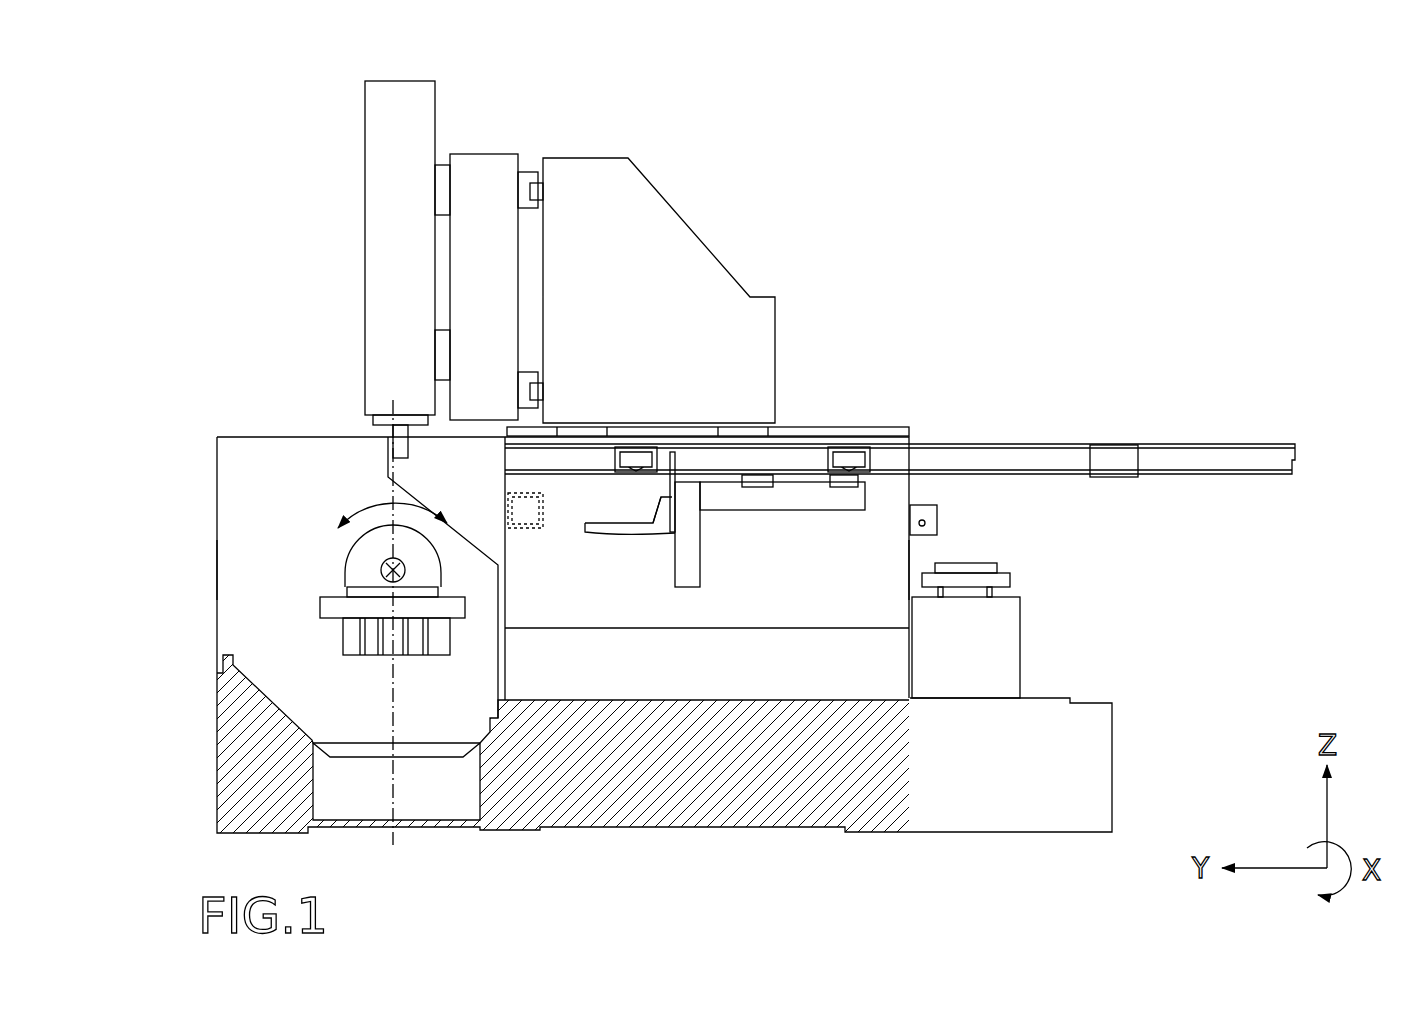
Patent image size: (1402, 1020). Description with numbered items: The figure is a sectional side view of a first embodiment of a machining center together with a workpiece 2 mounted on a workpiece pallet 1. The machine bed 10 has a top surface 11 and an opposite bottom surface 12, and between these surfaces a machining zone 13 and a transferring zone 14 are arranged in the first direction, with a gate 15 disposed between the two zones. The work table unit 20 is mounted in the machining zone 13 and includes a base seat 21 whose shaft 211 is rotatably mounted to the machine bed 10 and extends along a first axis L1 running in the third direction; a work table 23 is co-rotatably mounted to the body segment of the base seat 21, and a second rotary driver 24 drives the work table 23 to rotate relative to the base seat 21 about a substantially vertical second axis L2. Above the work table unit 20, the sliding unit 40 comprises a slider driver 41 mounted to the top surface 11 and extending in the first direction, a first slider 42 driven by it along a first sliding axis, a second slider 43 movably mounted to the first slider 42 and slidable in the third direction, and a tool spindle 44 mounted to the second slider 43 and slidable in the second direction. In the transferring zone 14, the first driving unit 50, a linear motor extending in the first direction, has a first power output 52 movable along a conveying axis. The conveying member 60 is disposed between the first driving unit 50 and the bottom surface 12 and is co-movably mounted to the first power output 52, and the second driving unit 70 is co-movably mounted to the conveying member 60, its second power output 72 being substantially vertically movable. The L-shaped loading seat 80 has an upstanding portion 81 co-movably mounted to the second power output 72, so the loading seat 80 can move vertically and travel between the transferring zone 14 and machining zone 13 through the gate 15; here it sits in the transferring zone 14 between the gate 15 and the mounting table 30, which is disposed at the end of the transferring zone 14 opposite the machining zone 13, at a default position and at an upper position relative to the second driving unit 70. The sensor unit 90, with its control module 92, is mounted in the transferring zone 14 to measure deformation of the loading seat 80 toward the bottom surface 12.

The workpiece pallet 1 is at (1013, 580).
The workpiece 2 is at (1001, 567).
The machine bed 10 is at (215, 772).
The top surface 11 is at (892, 433).
The bottom surface 12 is at (870, 833).
The machining zone 13 is at (313, 570).
The transferring zone 14 is at (897, 552).
The gate 15 is at (503, 478).
The work table unit 20 is at (300, 569).
The base seat 21 is at (330, 612).
The work table 23 is at (347, 593).
The second rotary driver 24 is at (347, 643).
The mounting table 30 is at (1024, 640).
The sliding unit 40 is at (598, 146).
The slider driver 41 is at (797, 425).
The first slider 42 is at (685, 245).
The second slider 43 is at (485, 160).
The tool spindle 44 is at (400, 95).
The first driving unit 50 is at (1054, 440).
The first power output 52 is at (840, 477).
The conveying member 60 is at (822, 510).
The second driving unit 70 is at (687, 590).
The second power output 72 is at (676, 503).
The loading seat 80 is at (610, 536).
The upstanding portion 81 is at (663, 527).
The sensor unit 90 is at (924, 503).
The control module 92 is at (520, 515).
The shaft 211 is at (350, 537).
The first axis L1 is at (393, 570).
The second axis L2 is at (396, 641).